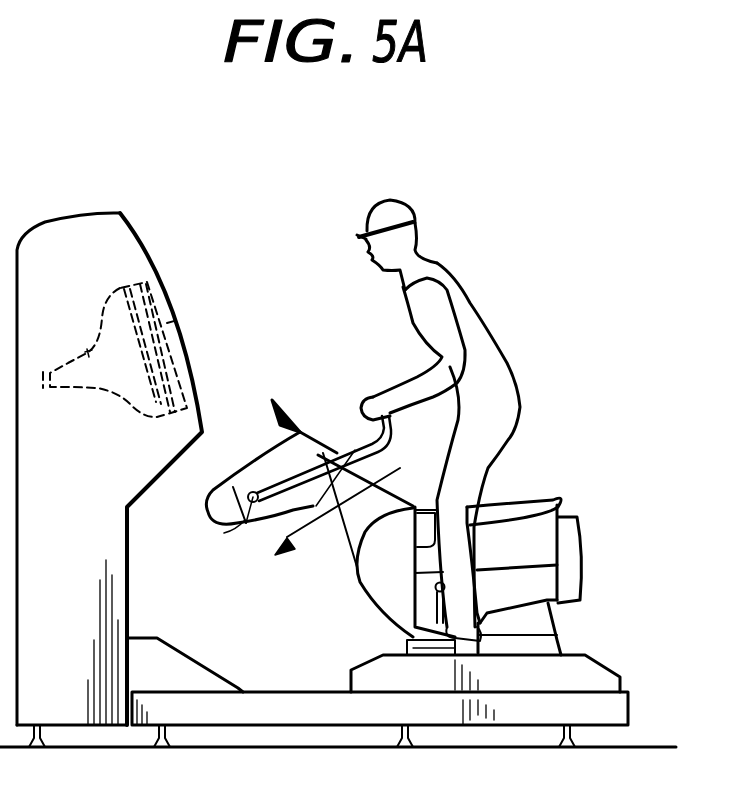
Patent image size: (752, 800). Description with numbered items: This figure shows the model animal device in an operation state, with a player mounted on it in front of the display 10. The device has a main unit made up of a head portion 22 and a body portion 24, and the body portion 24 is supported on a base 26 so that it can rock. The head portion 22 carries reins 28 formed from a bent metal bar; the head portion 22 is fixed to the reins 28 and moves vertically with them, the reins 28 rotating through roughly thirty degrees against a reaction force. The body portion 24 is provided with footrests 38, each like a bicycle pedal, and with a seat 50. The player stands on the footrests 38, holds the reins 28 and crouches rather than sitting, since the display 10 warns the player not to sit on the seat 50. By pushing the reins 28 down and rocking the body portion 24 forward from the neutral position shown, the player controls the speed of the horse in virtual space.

The display 10 is at (178, 312).
The head portion 22 is at (235, 518).
The body portion 24 is at (565, 571).
The base 26 is at (612, 710).
The reins 28 is at (362, 440).
The footrest 38 is at (407, 648).
The seat 50 is at (523, 500).